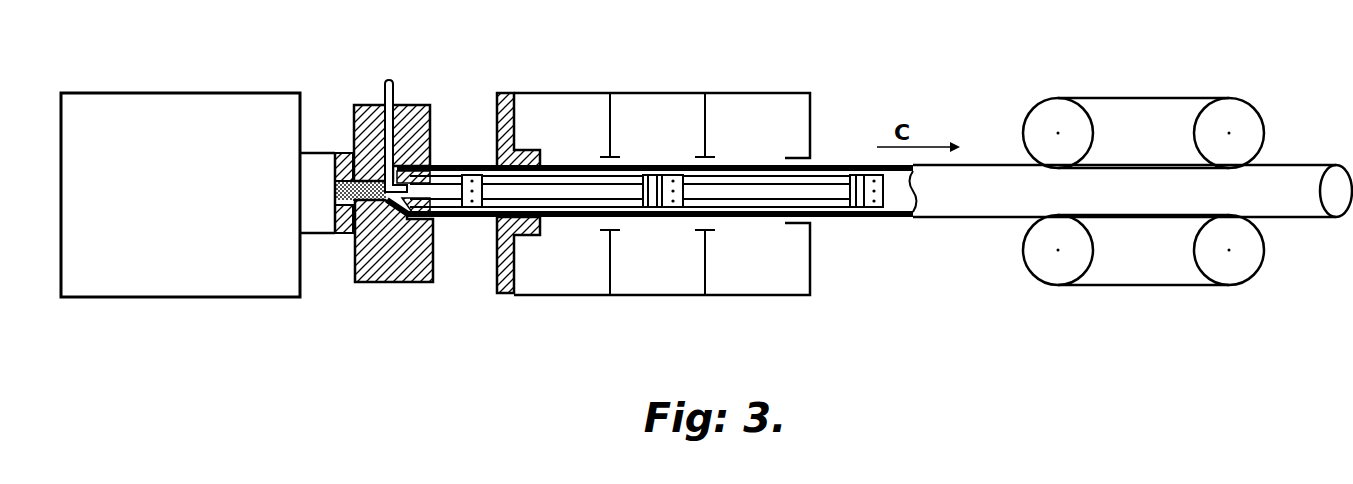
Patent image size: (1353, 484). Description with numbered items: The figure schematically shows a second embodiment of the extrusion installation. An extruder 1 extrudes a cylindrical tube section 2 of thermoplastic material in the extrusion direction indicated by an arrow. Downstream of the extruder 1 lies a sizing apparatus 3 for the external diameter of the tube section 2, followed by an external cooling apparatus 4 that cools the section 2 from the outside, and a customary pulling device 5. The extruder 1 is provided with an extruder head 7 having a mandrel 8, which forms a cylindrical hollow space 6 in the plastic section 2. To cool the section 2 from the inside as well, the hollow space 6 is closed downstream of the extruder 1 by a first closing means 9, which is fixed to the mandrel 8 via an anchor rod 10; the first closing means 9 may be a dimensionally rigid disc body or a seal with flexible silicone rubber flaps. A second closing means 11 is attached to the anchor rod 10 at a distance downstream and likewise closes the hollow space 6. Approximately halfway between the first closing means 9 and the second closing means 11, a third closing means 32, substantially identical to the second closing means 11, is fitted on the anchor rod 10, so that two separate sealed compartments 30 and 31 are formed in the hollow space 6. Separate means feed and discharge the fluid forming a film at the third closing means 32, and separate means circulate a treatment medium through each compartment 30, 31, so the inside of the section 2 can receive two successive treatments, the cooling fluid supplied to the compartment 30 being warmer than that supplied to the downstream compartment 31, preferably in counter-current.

The extruder 1 is at (253, 78).
The tube section 2 is at (468, 175).
The sizing apparatus 3 is at (508, 92).
The external cooling apparatus 4 is at (719, 82).
The pulling device 5 is at (1158, 93).
The hollow space 6 is at (445, 205).
The extruder head 7 is at (414, 105).
The mandrel 8 is at (392, 202).
The first closing means 9 is at (477, 212).
The anchor rod 10 is at (818, 193).
The second closing means 11 is at (870, 207).
The sealed compartment 30 is at (565, 203).
The sealed compartment 31 is at (765, 205).
The third closing means 32 is at (670, 215).